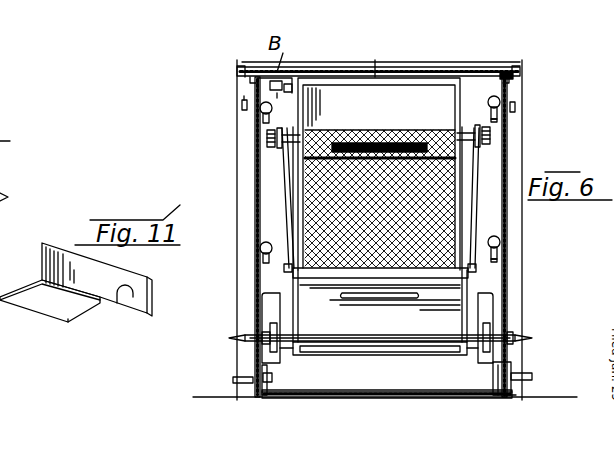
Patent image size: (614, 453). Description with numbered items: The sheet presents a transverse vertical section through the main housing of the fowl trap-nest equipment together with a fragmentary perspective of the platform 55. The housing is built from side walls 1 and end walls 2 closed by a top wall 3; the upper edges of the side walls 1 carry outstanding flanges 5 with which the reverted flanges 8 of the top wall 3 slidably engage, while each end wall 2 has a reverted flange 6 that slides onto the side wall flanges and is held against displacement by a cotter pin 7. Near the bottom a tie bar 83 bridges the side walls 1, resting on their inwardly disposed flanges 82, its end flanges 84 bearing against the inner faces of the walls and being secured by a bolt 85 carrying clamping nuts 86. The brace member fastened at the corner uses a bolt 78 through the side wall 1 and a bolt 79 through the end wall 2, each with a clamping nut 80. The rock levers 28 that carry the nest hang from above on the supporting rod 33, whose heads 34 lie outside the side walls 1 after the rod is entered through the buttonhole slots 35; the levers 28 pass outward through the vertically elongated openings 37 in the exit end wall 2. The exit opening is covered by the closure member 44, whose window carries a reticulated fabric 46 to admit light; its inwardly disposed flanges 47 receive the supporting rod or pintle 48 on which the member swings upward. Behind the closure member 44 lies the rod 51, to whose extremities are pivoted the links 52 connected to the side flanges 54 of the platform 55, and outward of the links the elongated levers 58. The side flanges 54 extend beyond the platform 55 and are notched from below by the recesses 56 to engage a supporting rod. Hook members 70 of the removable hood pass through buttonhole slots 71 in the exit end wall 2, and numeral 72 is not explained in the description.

In FIG. 6, the side wall 1 is at (255, 157).
In FIG. 6, the end wall 2 is at (266, 282).
In FIG. 6, the top wall 3 is at (411, 67).
In FIG. 6, the outstanding flange 5 is at (238, 68).
In FIG. 6, the reverted flange 6 is at (518, 318).
In FIG. 6, the cotter pin 7 is at (243, 103).
In FIG. 6, the reverted flange 8 is at (252, 80).
In FIG. 6, the rock lever 28 is at (272, 349).
In FIG. 6, the supporting rod 33 is at (406, 341).
In FIG. 6, the head 34 is at (229, 338).
In FIG. 6, the buttonhole slot 35 is at (262, 322).
In FIG. 6, the elongated opening 37 is at (294, 318).
In FIG. 6, the closure member 44 is at (353, 98).
In FIG. 6, the reticulated fabric 46 is at (403, 222).
In FIG. 6, the inwardly disposed flange 47 is at (306, 128).
In FIG. 6, the supporting rod or pintle 48 is at (373, 160).
In FIG. 6, the rod 51 is at (470, 130).
In FIG. 6, the lever or link 52 is at (478, 172).
In FIG. 11, the side flange 54 is at (47, 262).
In FIG. 6, the platform 55 is at (358, 292).
In FIG. 11, the platform 55 is at (55, 322).
In FIG. 11, the recess 56 is at (125, 304).
In FIG. 6, the elongated lever 58 is at (267, 137).
In FIG. 6, the hook member 70 is at (510, 122).
In FIG. 6, the buttonhole slot 71 is at (495, 95).
In FIG. 11, the tab 72 is at (10, 171).
In FIG. 6, the bolt 78 is at (252, 83).
In FIG. 6, the bolt 79 is at (289, 80).
In FIG. 6, the clamping nut 80 is at (285, 101).
In FIG. 6, the inwardly disposed flange 82 is at (508, 398).
In FIG. 6, the tie bar 83 is at (352, 393).
In FIG. 6, the flange 84 is at (262, 367).
In FIG. 6, the bolt 85 is at (273, 378).
In FIG. 6, the clamping nut 86 is at (258, 398).